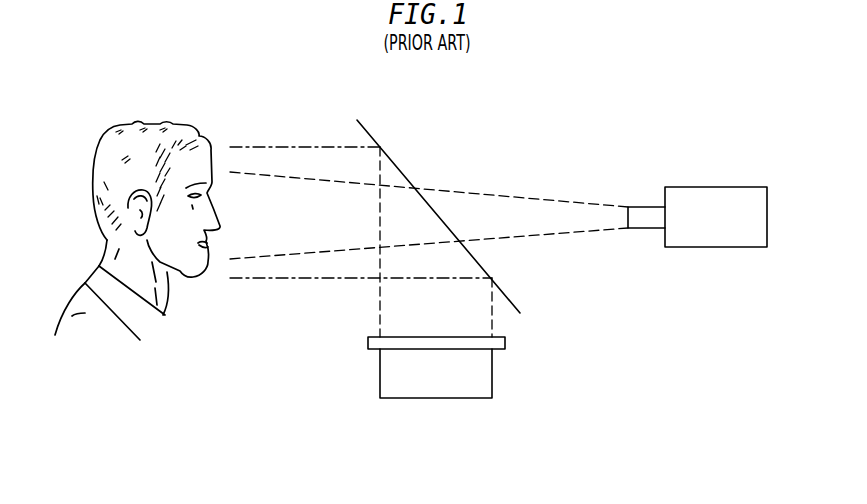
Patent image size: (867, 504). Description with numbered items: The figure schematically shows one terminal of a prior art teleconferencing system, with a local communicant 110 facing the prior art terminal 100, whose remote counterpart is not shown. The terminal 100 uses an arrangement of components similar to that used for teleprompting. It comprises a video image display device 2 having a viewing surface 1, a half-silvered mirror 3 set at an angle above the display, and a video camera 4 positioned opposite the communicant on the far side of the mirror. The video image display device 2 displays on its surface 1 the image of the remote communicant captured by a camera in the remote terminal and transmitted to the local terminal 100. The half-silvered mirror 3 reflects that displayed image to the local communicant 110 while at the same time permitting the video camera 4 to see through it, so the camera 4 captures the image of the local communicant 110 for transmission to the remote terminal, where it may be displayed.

The prior art terminal 100 is at (534, 157).
The local communicant 110 is at (121, 111).
The viewing surface 1 is at (367, 343).
The video image display device 2 is at (492, 375).
The half-silvered mirror 3 is at (373, 138).
The video camera 4 is at (730, 187).